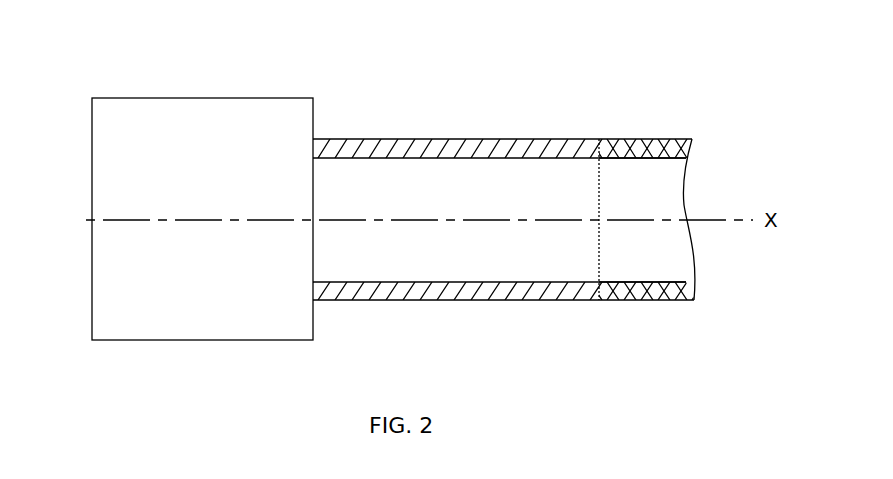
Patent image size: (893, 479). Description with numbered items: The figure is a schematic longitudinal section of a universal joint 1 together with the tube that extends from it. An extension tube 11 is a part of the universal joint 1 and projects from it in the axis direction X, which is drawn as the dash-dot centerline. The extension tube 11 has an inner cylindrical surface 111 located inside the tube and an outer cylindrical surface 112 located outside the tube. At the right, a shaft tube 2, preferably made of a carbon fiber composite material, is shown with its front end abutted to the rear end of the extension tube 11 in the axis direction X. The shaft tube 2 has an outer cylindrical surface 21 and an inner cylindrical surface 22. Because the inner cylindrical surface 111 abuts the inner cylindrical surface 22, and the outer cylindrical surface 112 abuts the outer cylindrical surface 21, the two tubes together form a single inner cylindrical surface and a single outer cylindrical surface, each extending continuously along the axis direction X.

The universal joint 1 is at (195, 118).
The extension tube 11 is at (497, 172).
The inner cylindrical surface of the extension tube 111 is at (425, 158).
The outer cylindrical surface of the extension tube 112 is at (447, 139).
The shaft tube 2 is at (658, 169).
The outer cylindrical surface of the shaft tube 21 is at (613, 139).
The inner cylindrical surface of the shaft tube 22 is at (676, 158).